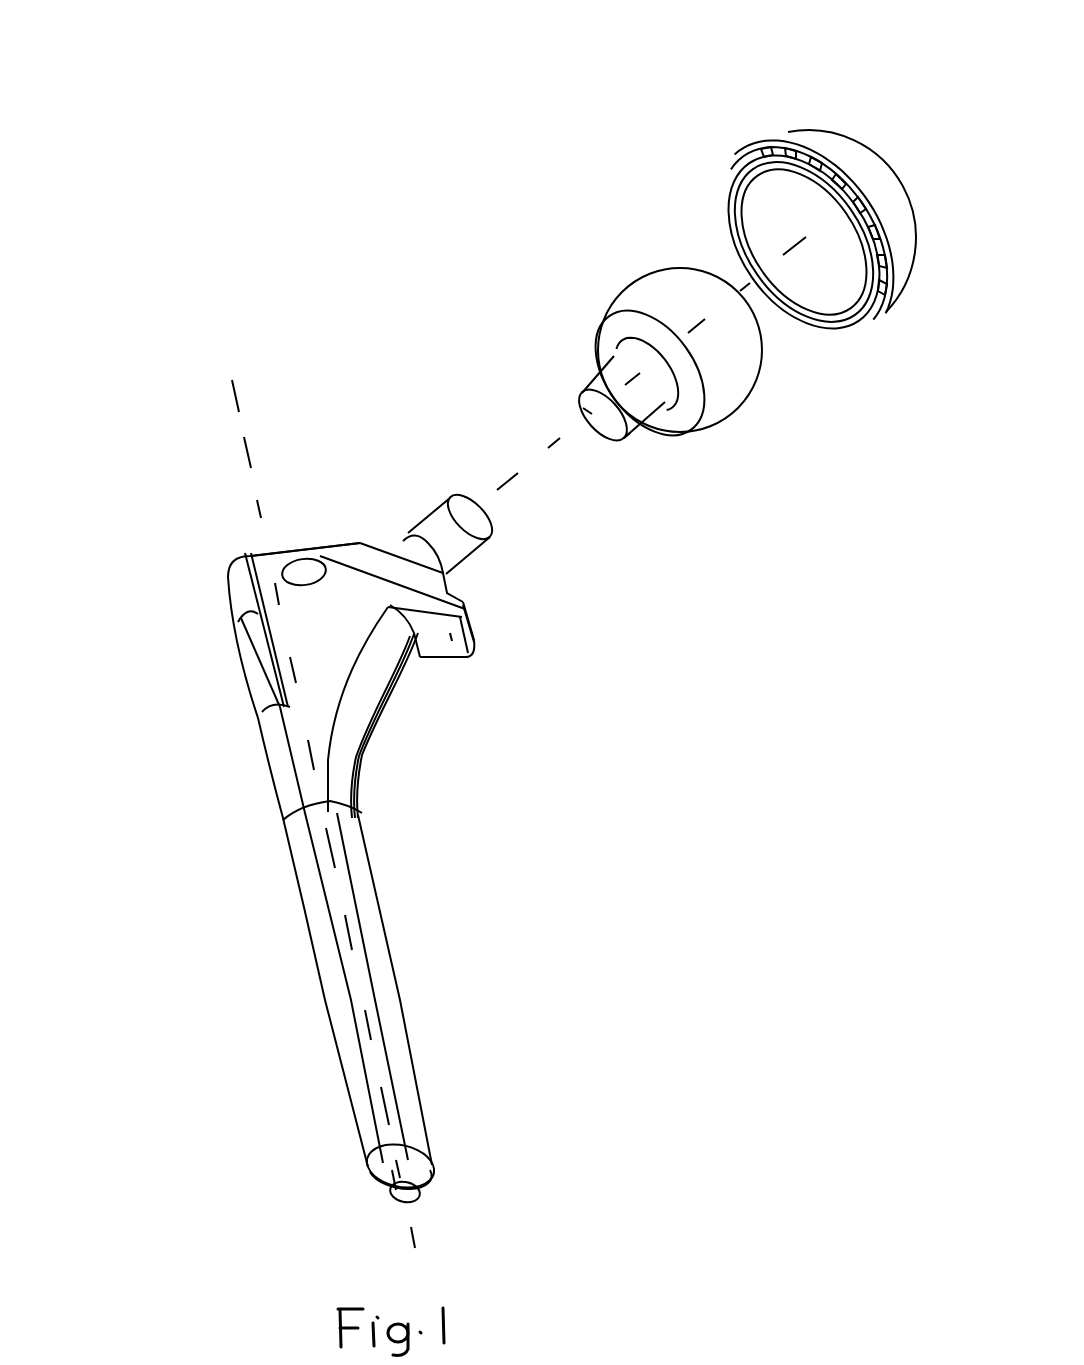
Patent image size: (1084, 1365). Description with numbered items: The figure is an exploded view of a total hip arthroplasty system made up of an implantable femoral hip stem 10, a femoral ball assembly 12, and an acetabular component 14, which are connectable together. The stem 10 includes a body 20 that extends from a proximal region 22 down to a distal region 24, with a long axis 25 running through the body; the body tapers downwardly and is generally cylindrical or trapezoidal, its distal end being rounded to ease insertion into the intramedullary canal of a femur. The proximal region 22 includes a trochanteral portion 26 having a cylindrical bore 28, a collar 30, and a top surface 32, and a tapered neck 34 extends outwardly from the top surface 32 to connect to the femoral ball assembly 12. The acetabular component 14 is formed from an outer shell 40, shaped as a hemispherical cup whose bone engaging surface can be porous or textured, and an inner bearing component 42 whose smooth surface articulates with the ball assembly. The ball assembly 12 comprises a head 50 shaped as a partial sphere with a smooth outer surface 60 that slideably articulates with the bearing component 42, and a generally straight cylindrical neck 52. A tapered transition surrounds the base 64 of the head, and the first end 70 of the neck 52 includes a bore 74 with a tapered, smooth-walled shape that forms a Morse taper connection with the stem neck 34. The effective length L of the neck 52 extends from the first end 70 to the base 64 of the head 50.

The femoral hip stem 10 is at (165, 660).
The femoral ball assembly 12 is at (586, 258).
The acetabular component 14 is at (716, 97).
The body 20 is at (268, 782).
The proximal region 22 is at (222, 535).
The distal region 24 is at (318, 1172).
The long axis 25 is at (228, 402).
The trochanteral portion 26 is at (397, 708).
The cylindrical bore 28 is at (303, 574).
The collar 30 is at (462, 657).
The top surface 32 is at (373, 540).
The neck 34 is at (470, 572).
The outer shell 40 is at (789, 128).
The bearing component 42 is at (850, 300).
The head 50 is at (645, 260).
The neck 52 is at (646, 437).
The outer surface 60 is at (745, 350).
The base 64 is at (700, 431).
The first end 70 is at (627, 443).
The bore 74 is at (606, 427).